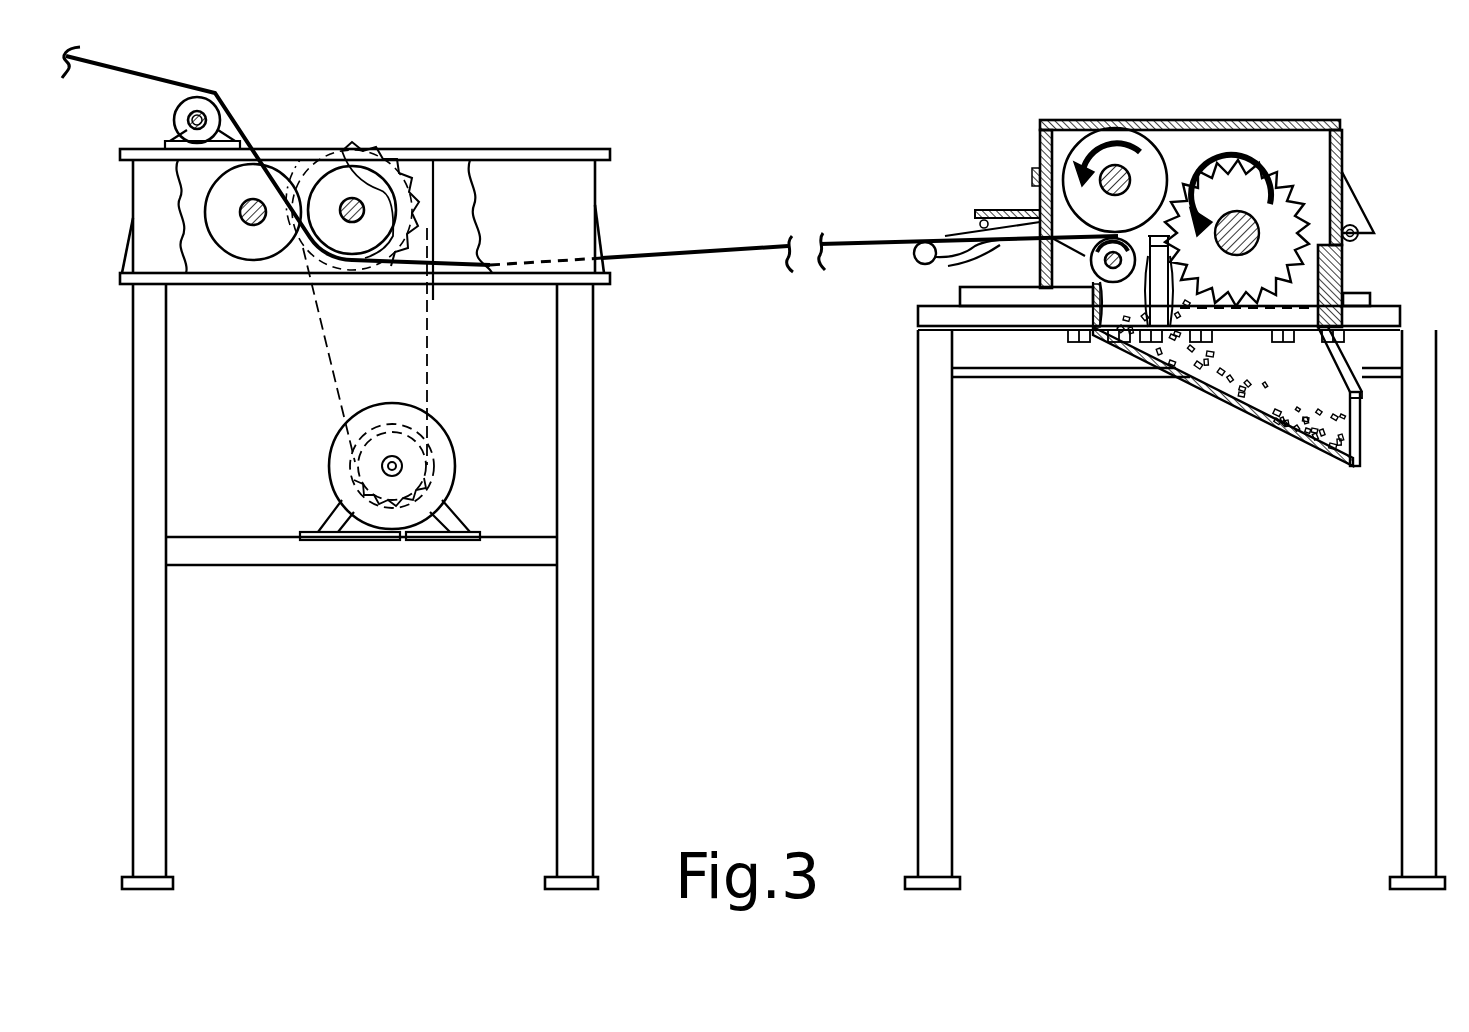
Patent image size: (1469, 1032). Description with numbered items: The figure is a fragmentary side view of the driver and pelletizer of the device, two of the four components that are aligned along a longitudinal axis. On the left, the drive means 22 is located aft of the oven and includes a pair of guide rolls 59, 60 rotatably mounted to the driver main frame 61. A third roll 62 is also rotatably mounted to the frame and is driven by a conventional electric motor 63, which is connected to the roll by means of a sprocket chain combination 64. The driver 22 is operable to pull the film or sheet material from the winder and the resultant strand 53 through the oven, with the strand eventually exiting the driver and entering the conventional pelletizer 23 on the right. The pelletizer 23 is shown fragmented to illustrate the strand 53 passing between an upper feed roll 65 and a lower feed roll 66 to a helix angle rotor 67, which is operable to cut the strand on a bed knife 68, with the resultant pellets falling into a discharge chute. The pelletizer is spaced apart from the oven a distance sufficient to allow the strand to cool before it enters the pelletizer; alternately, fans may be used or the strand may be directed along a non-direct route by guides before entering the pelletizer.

The drive means 22 is at (378, 92).
The pelletizer 23 is at (1174, 104).
The strand 53 is at (770, 255).
The guide roll 59 is at (176, 122).
The guide roll 60 is at (214, 218).
The driver main frame 61 is at (582, 452).
The third roll 62 is at (340, 166).
The electric motor 63 is at (444, 442).
The sprocket chain combination 64 is at (436, 300).
The upper feed roll 65 is at (1152, 178).
The lower feed roll 66 is at (1090, 250).
The helix angle rotor 67 is at (1308, 196).
The bed knife 68 is at (1156, 352).